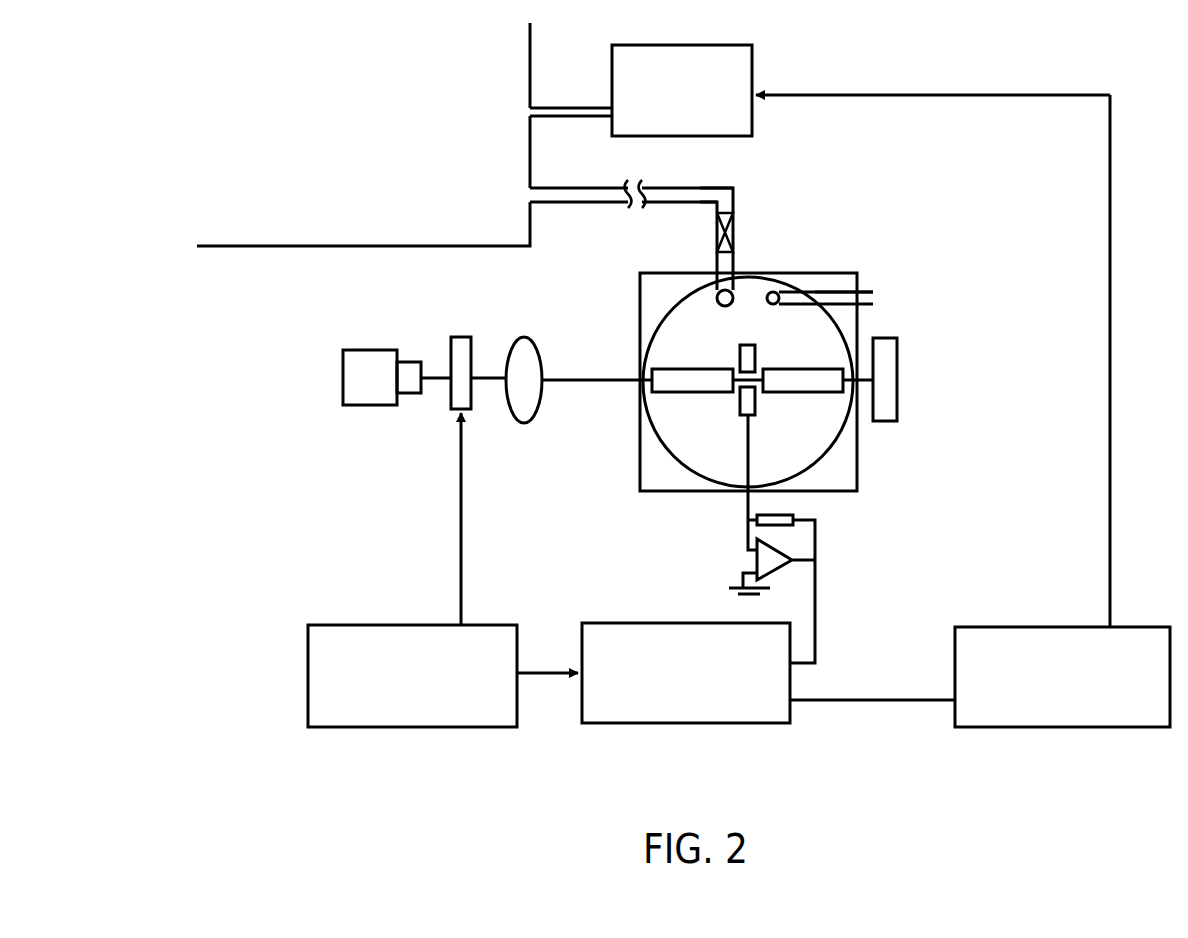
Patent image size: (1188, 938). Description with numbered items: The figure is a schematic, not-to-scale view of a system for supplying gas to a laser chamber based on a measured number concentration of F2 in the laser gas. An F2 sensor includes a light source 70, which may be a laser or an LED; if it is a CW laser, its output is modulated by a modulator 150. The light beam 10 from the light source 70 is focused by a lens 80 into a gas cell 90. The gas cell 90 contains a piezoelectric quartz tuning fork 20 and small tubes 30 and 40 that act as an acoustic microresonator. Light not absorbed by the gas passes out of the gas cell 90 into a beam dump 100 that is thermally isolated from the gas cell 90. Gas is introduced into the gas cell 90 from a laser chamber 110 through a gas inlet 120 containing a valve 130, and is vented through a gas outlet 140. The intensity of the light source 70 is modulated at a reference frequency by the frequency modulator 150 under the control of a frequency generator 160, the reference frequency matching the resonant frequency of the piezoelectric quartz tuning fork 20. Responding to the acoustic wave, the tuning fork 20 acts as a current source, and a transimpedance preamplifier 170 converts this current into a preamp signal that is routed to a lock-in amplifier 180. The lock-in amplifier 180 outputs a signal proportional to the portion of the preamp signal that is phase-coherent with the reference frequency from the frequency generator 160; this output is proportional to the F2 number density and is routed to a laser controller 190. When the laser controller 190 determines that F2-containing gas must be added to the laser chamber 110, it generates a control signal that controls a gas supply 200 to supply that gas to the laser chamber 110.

The light beam 10 is at (594, 378).
The piezoelectric quartz tuning fork 20 is at (745, 345).
The small tube 30 is at (683, 393).
The small tube 40 is at (848, 455).
The light source 70 is at (343, 380).
The lens 80 is at (505, 350).
The gas cell 90 is at (840, 330).
The beam dump 100 is at (885, 388).
The laser chamber 110 is at (367, 93).
The gas inlet 120 is at (706, 188).
The valve 130 is at (733, 225).
The gas outlet 140 is at (815, 306).
The modulator 150 is at (450, 350).
The frequency generator 160 is at (328, 625).
The transimpedance preamplifier 170 is at (846, 543).
The lock-in amplifier 180 is at (705, 722).
The laser controller 190 is at (1098, 727).
The gas supply 200 is at (755, 82).